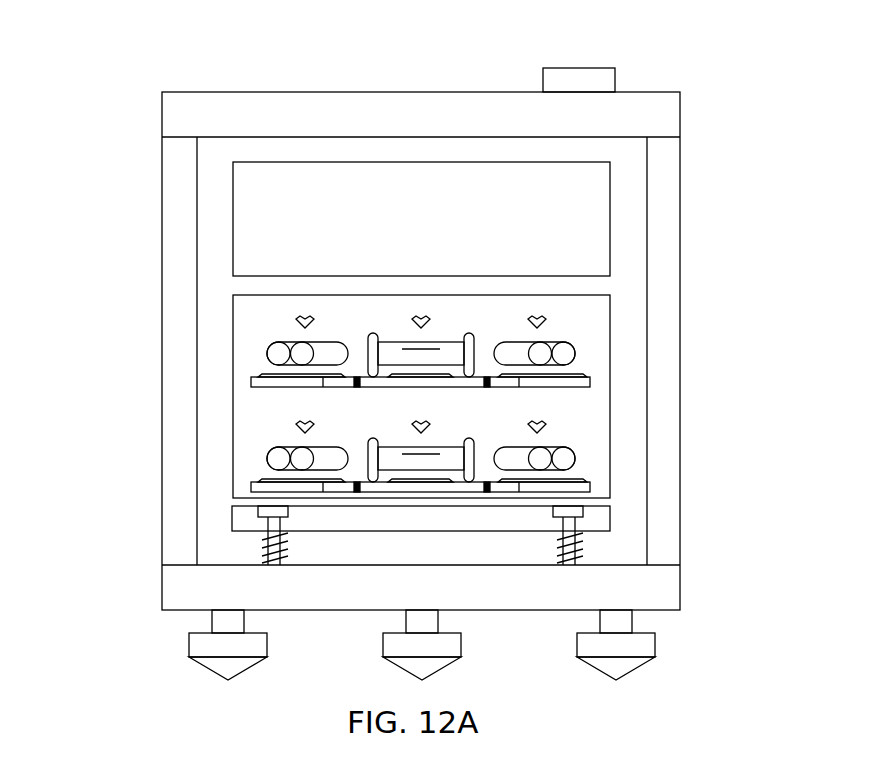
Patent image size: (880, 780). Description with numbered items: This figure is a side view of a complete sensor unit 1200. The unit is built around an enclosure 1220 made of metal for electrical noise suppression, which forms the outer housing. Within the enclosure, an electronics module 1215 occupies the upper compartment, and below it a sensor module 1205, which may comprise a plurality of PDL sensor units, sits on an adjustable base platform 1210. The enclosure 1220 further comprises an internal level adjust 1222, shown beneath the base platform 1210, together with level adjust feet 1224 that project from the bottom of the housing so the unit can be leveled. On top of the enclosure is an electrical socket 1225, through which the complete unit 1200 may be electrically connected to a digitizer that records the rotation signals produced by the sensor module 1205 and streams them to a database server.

The complete sensor unit 1200 is at (186, 57).
The sensor module 1205 is at (610, 322).
The adjustable base platform 1210 is at (613, 515).
The electronics module 1215 is at (452, 233).
The enclosure 1220 is at (668, 256).
The internal level adjust 1222 is at (585, 548).
The level adjust feet 1224 is at (653, 640).
The electrical socket 1225 is at (602, 80).